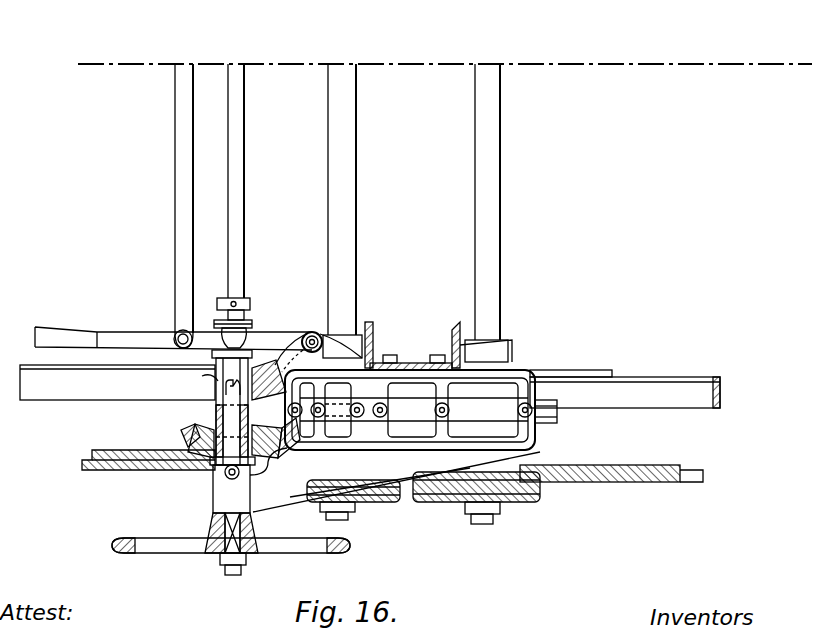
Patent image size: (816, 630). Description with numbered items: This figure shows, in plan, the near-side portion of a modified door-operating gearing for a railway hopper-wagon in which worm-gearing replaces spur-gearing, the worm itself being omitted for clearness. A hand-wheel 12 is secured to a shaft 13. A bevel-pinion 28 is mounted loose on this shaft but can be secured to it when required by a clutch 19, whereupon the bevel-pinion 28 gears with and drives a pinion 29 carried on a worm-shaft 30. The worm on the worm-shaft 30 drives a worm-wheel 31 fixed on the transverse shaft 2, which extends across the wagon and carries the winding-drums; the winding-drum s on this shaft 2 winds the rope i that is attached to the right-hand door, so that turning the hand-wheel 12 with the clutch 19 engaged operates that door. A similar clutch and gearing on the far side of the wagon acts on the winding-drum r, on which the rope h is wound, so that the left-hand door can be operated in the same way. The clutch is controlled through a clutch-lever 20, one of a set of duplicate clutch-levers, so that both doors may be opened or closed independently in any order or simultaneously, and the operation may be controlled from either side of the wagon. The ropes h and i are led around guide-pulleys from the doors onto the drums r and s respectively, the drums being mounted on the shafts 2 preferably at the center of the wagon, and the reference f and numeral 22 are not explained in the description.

The shaft 2 is at (348, 128).
The hand-wheel 12 is at (180, 553).
The shaft 13 is at (237, 147).
The clutch 19 is at (215, 386).
The clutch-lever 20 is at (133, 336).
The vertical rod 22 is at (175, 155).
The bevel-pinion 28 is at (205, 446).
The pinion 29 is at (274, 365).
The worm-shaft 30 is at (402, 405).
The worm-wheel 31 is at (560, 414).
The bar f is at (635, 400).
The wire rope h is at (137, 472).
The wire rope i is at (633, 484).
The winding-drum r is at (368, 505).
The winding-drum s is at (438, 506).